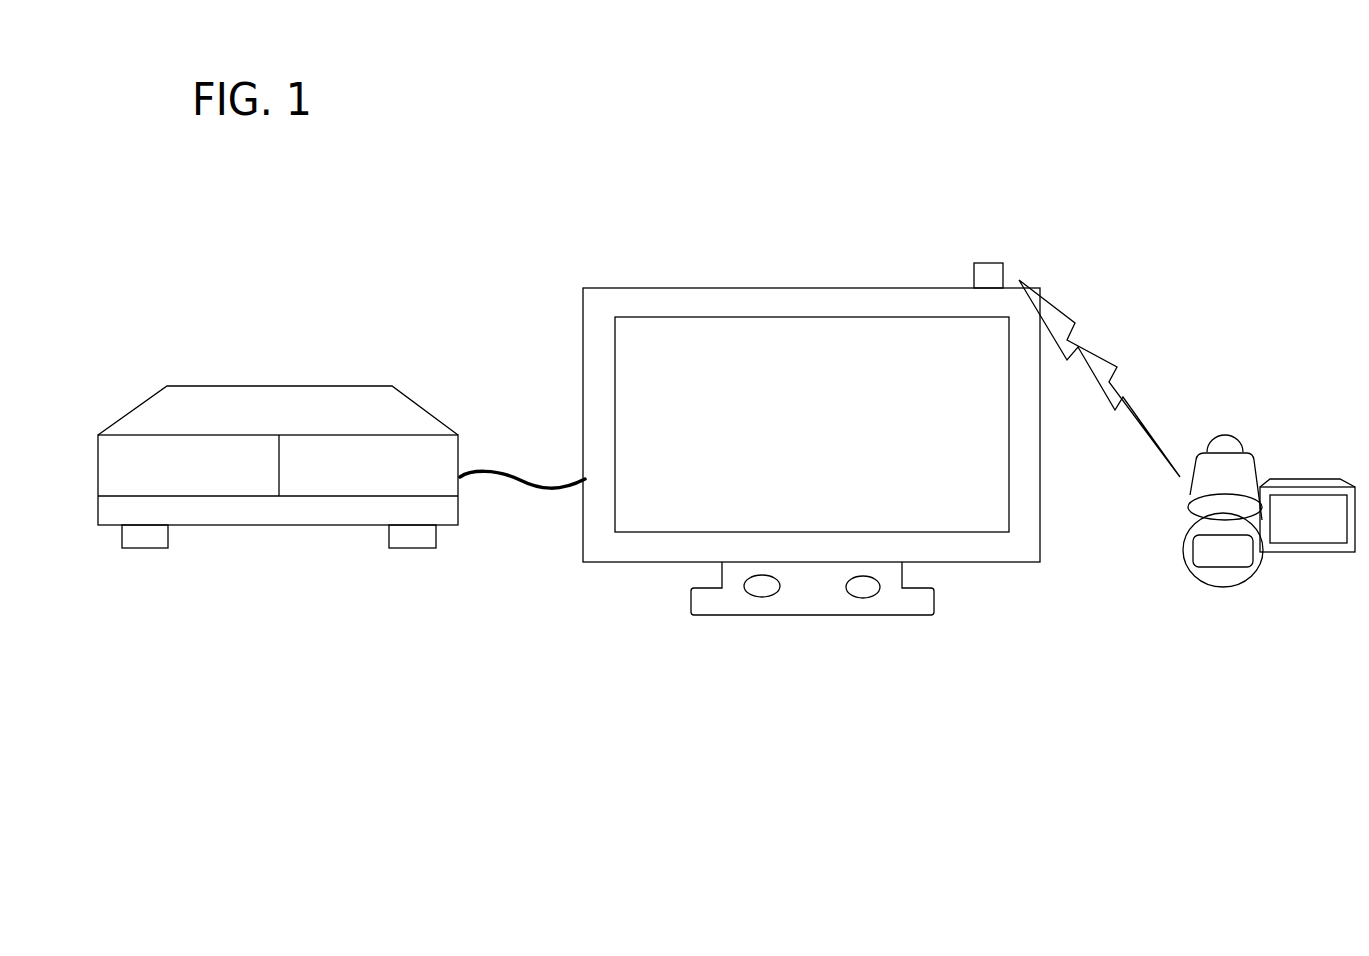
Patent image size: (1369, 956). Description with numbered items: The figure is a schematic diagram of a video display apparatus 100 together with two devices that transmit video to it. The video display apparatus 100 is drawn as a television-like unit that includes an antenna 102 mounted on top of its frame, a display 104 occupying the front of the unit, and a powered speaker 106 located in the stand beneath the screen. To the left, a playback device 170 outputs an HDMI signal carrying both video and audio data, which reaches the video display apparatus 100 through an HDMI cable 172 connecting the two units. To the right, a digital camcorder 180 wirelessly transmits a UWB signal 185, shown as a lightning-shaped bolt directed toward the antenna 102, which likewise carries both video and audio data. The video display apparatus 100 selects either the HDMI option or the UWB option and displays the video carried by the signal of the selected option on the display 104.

The video display apparatus 100 is at (850, 288).
The antenna 102 is at (985, 263).
The display 104 is at (715, 340).
The powered speaker 106 is at (850, 587).
The playback device 170 is at (313, 386).
The HDMI cable 172 is at (522, 480).
The digital camcorder 180 is at (1230, 435).
The UWB signal 185 is at (1082, 335).